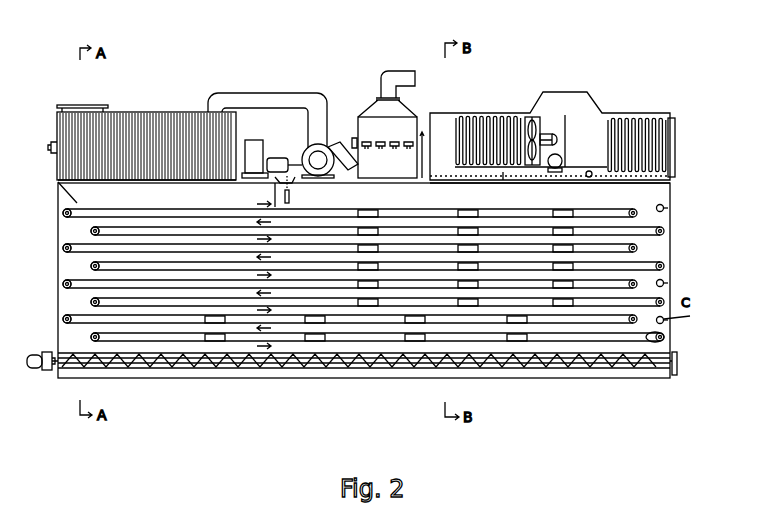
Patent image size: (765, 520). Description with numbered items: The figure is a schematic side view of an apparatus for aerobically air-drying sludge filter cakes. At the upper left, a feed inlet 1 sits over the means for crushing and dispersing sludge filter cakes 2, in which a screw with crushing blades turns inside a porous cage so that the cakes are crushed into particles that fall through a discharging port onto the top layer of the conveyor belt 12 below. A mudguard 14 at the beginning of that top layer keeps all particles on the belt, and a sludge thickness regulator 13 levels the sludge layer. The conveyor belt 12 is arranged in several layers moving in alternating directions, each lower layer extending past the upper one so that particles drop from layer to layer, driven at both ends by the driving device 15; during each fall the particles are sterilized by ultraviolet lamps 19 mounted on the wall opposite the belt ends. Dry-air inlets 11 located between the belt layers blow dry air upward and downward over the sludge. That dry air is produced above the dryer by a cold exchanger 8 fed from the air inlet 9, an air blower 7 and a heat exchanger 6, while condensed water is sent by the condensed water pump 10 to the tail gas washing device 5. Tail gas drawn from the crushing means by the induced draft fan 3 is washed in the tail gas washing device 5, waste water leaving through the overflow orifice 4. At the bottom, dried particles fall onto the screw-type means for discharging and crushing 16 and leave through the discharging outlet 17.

The feed inlet 1 is at (86, 104).
The means for crushing and dispersing sludge filter cakes 2 is at (150, 110).
The induced draft fan 3 is at (307, 152).
The overflow orifice 4 is at (355, 140).
The tail gas washing device 5 is at (398, 122).
The heat exchanger 6 is at (498, 118).
The air blower 7 is at (528, 122).
The cold exchanger 8 is at (632, 118).
The air inlet 9 is at (676, 150).
The condensed water pump 10 is at (589, 178).
The dry-air inlet 11 is at (472, 212).
The conveyor belt 12 is at (416, 209).
The sludge thickness regulator 13 is at (289, 194).
The mudguard 14 is at (77, 202).
The driving device 15 is at (64, 247).
The means for discharging and crushing 16 is at (73, 358).
The discharging outlet 17 is at (674, 362).
The ultraviolet lamps 19 is at (664, 208).